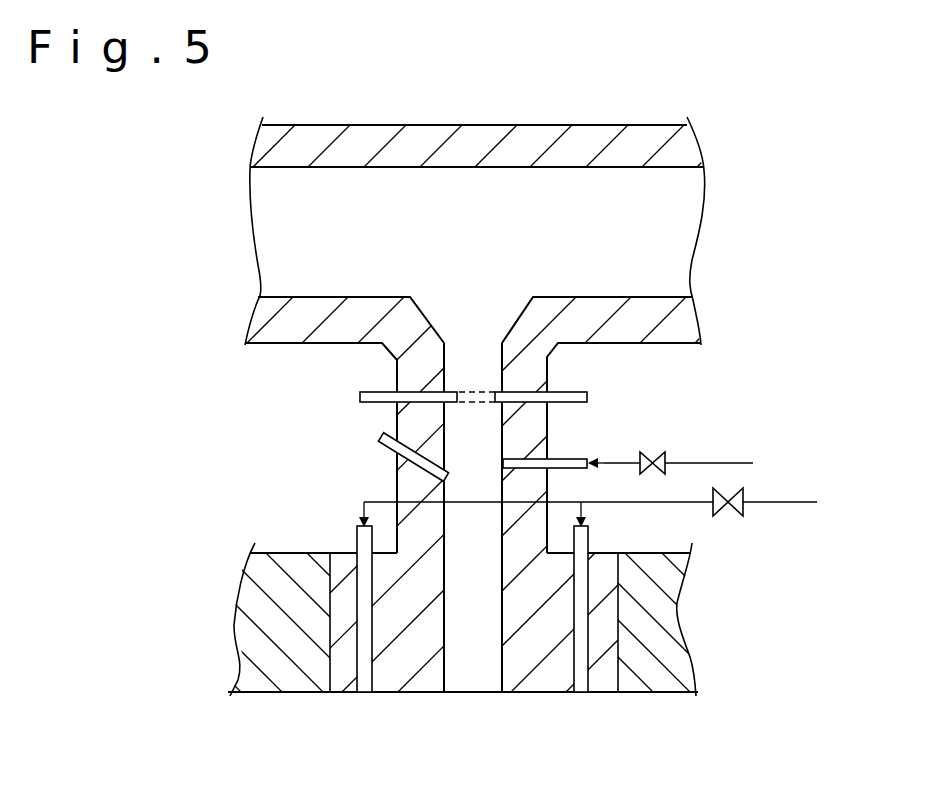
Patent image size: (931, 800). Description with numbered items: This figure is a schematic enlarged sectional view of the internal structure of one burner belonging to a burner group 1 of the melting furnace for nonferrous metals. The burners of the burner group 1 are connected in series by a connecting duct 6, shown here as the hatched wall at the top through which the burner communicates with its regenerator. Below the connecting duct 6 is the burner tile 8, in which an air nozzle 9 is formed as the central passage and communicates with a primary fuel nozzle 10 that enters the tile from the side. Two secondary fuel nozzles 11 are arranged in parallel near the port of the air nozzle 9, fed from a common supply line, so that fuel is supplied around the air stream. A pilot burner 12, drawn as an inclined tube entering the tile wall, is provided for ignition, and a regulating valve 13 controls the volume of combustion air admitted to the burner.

The burner group 1 is at (465, 494).
The connecting duct 6 is at (530, 132).
The burner tile 8 is at (537, 423).
The air nozzle 9 is at (463, 692).
The primary fuel nozzle 10 is at (570, 455).
The secondary fuel nozzle 11 is at (360, 692).
The pilot burner 12 is at (380, 440).
The regulating valve 13 is at (360, 396).